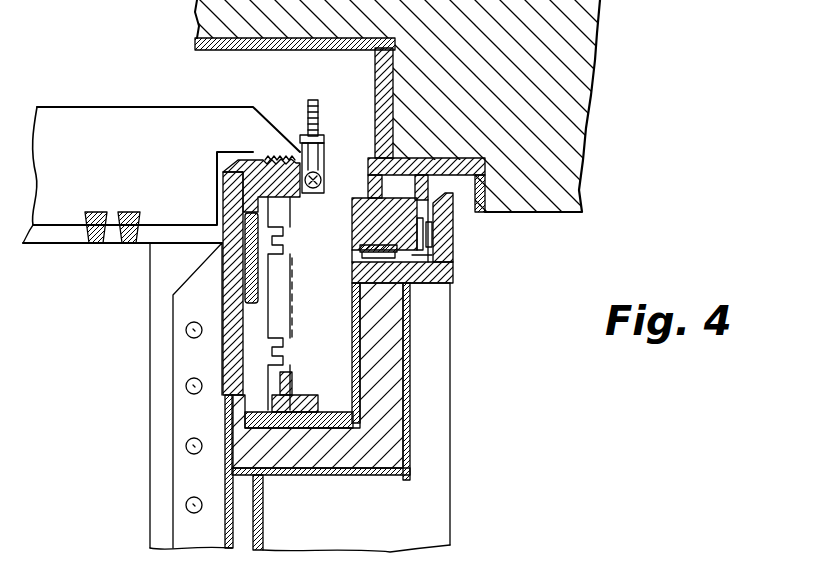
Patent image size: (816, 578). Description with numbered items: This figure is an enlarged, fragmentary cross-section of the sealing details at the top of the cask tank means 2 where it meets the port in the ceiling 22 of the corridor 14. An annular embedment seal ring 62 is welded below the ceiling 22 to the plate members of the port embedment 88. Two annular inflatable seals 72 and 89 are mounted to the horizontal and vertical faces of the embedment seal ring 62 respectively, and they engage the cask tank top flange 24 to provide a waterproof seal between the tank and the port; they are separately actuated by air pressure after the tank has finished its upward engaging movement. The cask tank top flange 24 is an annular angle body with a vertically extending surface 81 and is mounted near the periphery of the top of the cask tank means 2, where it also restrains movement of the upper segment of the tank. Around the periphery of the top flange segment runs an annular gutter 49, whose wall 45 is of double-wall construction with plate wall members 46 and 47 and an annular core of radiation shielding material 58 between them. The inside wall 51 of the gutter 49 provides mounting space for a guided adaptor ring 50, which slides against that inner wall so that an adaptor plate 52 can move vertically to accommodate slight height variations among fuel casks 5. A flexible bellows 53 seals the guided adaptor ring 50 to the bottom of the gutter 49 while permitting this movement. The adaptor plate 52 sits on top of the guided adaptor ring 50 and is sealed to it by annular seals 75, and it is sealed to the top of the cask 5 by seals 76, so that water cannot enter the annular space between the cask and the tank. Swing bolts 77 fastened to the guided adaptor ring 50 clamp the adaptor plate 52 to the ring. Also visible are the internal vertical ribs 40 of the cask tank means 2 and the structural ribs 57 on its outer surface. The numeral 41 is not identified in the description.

The cask tank means 2 is at (452, 405).
The fuel cask 5 is at (108, 322).
The corridor 14 is at (522, 478).
The ceiling 22 is at (588, 128).
The cask tank top flange 24 is at (456, 279).
The internal vertical extending ribs 40 is at (180, 362).
The holes 41 is at (186, 446).
The wall of the gutter 45 is at (410, 384).
The plate wall member 46 is at (410, 427).
The plate wall member 47 is at (348, 368).
The annular gutter 49 is at (332, 247).
The guided adaptor ring 50 is at (249, 153).
The inside wall of the annular gutter 51 is at (223, 268).
The adaptor plate 52 is at (82, 106).
The flexible bellows 53 is at (327, 297).
The structural ribs 57 is at (440, 518).
The radiation shielding material 58 is at (347, 452).
The embedment seal ring 62 is at (372, 186).
The inflatable seal 72 is at (355, 262).
The annular seals 75 is at (288, 156).
The seals 76 is at (129, 212).
The swing bolts 77 is at (316, 133).
The vertically extending surface 81 is at (440, 252).
The port embedment 88 is at (375, 68).
The inflatable seal 89 is at (455, 215).